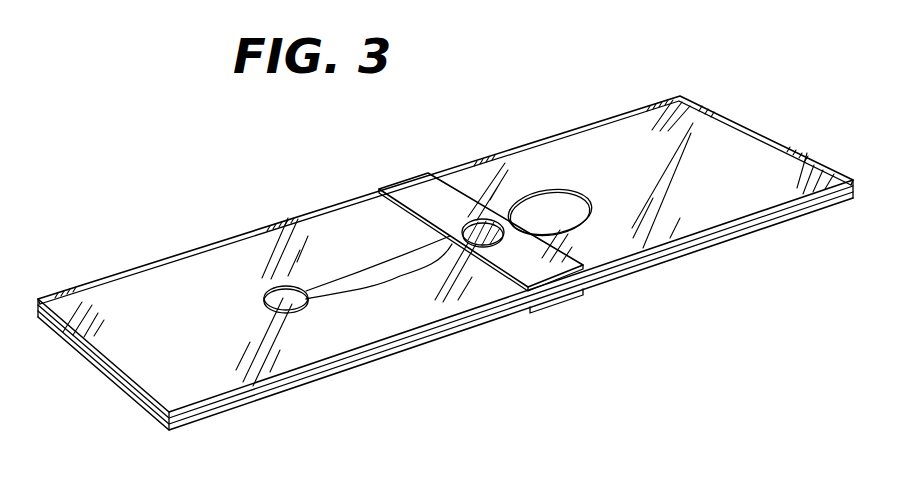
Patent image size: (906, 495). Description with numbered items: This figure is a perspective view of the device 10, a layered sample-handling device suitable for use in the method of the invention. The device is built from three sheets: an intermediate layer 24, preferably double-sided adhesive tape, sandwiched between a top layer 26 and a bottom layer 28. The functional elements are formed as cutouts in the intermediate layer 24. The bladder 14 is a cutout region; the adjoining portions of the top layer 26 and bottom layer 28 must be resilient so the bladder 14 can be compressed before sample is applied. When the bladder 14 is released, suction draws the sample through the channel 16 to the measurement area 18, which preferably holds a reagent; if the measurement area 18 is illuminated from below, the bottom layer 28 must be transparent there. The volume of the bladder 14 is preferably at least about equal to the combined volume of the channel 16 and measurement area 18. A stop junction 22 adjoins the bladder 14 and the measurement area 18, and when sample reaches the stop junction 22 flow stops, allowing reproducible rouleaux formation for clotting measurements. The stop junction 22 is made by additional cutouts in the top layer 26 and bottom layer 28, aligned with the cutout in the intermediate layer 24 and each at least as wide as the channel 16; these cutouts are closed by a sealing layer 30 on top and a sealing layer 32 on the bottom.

The device 10 is at (211, 184).
The bladder 14 is at (553, 212).
The channel 16 is at (355, 283).
The measurement area 18 is at (422, 256).
The stop junction 22 is at (592, 257).
The intermediate layer 24 is at (152, 414).
The top layer 26 is at (109, 300).
The bottom layer 28 is at (217, 414).
The sealing layer 30 is at (418, 173).
The sealing layer 32 is at (573, 300).